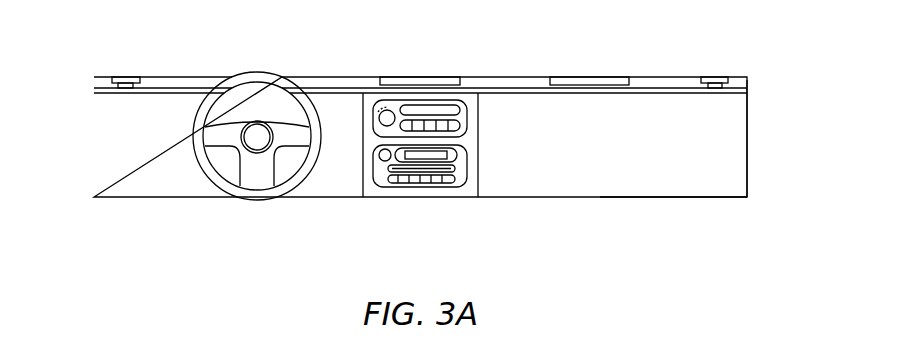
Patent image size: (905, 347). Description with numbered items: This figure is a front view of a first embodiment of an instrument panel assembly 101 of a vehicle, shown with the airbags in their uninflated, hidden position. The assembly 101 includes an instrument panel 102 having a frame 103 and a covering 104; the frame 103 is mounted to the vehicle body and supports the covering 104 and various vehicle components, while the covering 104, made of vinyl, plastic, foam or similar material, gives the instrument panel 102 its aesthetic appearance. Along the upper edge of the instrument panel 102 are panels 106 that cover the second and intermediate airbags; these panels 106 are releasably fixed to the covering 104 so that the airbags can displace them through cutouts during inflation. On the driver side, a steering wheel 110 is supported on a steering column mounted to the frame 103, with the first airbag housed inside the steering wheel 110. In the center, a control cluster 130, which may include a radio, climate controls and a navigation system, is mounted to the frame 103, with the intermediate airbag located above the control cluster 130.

The instrument panel assembly 101 is at (756, 106).
The instrument panel 102 is at (89, 120).
The frame 103 is at (487, 77).
The covering 104 is at (733, 113).
The panels 106 is at (125, 77).
The steering wheel 110 is at (243, 74).
The control cluster 130 is at (375, 98).